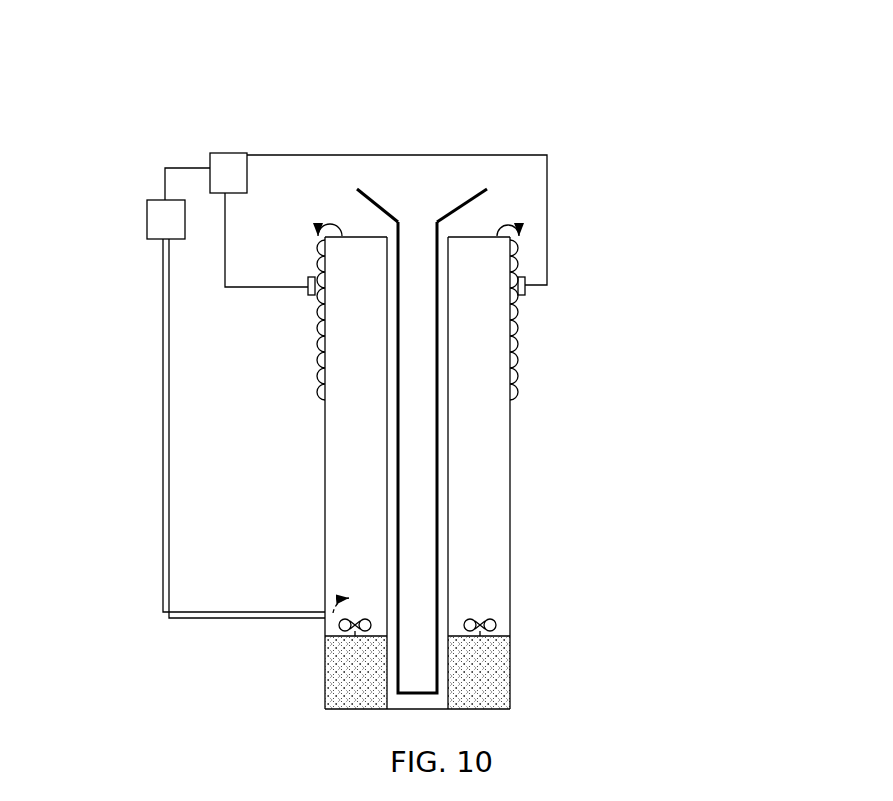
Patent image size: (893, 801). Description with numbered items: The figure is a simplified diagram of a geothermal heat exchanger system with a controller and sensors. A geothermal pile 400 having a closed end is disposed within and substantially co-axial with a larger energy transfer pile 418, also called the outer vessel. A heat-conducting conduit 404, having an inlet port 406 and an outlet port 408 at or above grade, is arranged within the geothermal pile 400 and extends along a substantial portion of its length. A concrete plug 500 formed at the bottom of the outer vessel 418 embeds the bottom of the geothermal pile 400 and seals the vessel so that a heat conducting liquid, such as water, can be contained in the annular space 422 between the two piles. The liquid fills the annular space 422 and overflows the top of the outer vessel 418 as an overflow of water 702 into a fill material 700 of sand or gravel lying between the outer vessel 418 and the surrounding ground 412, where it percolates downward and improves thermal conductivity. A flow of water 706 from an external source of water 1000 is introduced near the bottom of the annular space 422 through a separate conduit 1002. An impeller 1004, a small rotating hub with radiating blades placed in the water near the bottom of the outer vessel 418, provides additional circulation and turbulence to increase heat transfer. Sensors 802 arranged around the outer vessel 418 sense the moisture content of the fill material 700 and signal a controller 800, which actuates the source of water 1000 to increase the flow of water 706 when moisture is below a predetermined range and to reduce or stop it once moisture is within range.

The controller 800 is at (224, 151).
The source of water 1000 is at (145, 218).
The separate conduit 1002 is at (161, 469).
The inlet port 406 is at (373, 199).
The outlet port 408 is at (470, 199).
The volume of liquid overflowed 702 is at (505, 221).
The sensors 802 is at (308, 288).
The fill material 700 is at (522, 352).
The conduit 404 is at (443, 460).
The annular space 422 is at (487, 512).
The energy transfer pile 418 is at (512, 545).
The geothermal pile 400 is at (452, 590).
The surrounding ground 412 is at (738, 640).
The flow of water 706 is at (337, 607).
The impeller 1004 is at (334, 628).
The concrete plug 500 is at (485, 673).